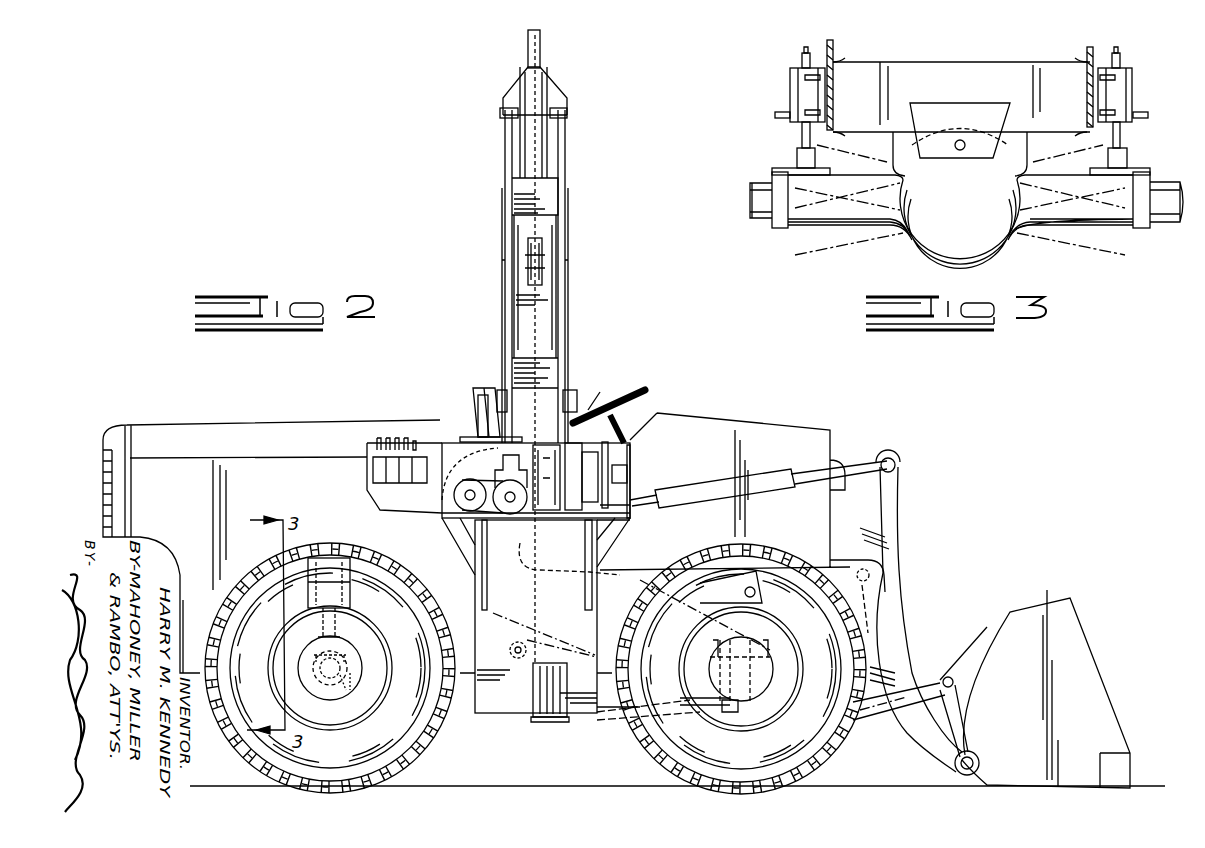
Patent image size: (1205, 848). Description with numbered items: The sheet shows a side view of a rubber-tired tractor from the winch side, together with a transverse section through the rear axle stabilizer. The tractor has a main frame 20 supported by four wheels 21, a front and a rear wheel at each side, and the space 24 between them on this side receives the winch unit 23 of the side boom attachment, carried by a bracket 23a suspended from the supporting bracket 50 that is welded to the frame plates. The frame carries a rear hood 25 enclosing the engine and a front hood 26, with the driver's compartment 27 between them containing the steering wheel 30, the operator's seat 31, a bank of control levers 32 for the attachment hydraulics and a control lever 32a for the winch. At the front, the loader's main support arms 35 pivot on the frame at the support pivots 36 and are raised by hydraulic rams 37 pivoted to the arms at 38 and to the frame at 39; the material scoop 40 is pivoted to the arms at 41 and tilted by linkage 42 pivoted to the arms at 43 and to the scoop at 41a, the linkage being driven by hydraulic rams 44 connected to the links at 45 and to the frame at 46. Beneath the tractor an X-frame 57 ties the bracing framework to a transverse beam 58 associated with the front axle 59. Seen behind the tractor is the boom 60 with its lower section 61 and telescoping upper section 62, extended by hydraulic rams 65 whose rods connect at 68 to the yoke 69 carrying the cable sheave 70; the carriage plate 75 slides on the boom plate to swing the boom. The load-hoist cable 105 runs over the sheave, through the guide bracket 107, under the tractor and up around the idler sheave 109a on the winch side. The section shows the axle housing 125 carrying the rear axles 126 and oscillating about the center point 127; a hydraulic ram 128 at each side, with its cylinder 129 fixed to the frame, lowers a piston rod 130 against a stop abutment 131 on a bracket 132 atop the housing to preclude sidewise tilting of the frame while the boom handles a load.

In FIG. 2, the main frame 20 is at (205, 725).
In FIG. 3, the main frame 20 is at (1018, 62).
In FIG. 2, the wheels 21 is at (418, 742).
In FIG. 2, the winch unit 23 is at (446, 455).
In FIG. 2, the bracket 23a is at (468, 540).
In FIG. 2, the space 24 is at (539, 629).
In FIG. 2, the rear housing or hood 25 is at (202, 424).
In FIG. 2, the hood or housing 26 is at (805, 425).
In FIG. 2, the driver's compartment 27 is at (605, 385).
In FIG. 2, the steering wheel 30 is at (632, 394).
In FIG. 2, the operator's seat 31 is at (484, 390).
In FIG. 2, the bank of control levers 32 is at (476, 440).
In FIG. 2, the control lever 32a is at (620, 448).
In FIG. 2, the main support arms 35 is at (897, 615).
In FIG. 2, the support pivots 36 is at (544, 470).
In FIG. 2, the hydraulic rams 37 is at (612, 610).
In FIG. 2, the pivot 38 is at (745, 595).
In FIG. 2, the pivot 39 is at (513, 645).
In FIG. 2, the material scoop 40 is at (1084, 622).
In FIG. 2, the pivot 41 is at (955, 770).
In FIG. 2, the pivots 41a is at (947, 677).
In FIG. 2, the linkage 42 is at (899, 502).
In FIG. 2, the pivot 43 is at (870, 574).
In FIG. 2, the hydraulic rams 44 is at (704, 482).
In FIG. 2, the pivot 45 is at (888, 458).
In FIG. 2, the pivot 46 is at (612, 516).
In FIG. 2, the supporting bracket 50 is at (462, 497).
In FIG. 2, the X-frame 57 is at (608, 710).
In FIG. 2, the transverse beam or support 58 is at (640, 735).
In FIG. 2, the front axle 59 is at (660, 760).
In FIG. 2, the boom 60 is at (521, 307).
In FIG. 2, the lower section 61 is at (518, 338).
In FIG. 2, the upper section 62 is at (516, 154).
In FIG. 2, the hydraulic rams 65 is at (503, 272).
In FIG. 2, the connection 68 is at (499, 112).
In FIG. 2, the yoke 69 is at (516, 84).
In FIG. 2, the cable sheave 70 is at (527, 46).
In FIG. 2, the carriage plate 75 is at (558, 358).
In FIG. 2, the load-hoist cable 105 is at (548, 210).
In FIG. 2, the guide bracket 107 is at (527, 246).
In FIG. 2, the idler sheave 109a is at (540, 700).
In FIG. 2, the axle housing 125 is at (348, 682).
In FIG. 3, the axle housing 125 is at (1128, 228).
In FIG. 3, the rear axles 126 is at (766, 222).
In FIG. 3, the center point 127 is at (958, 140).
In FIG. 2, the hydraulic ram 128 is at (335, 560).
In FIG. 3, the hydraulic ram 128 is at (780, 66).
In FIG. 3, the cylinder 129 is at (790, 87).
In FIG. 3, the piston rod 130 is at (800, 135).
In FIG. 3, the stop abutment 131 is at (795, 158).
In FIG. 3, the bracket 132 is at (772, 172).